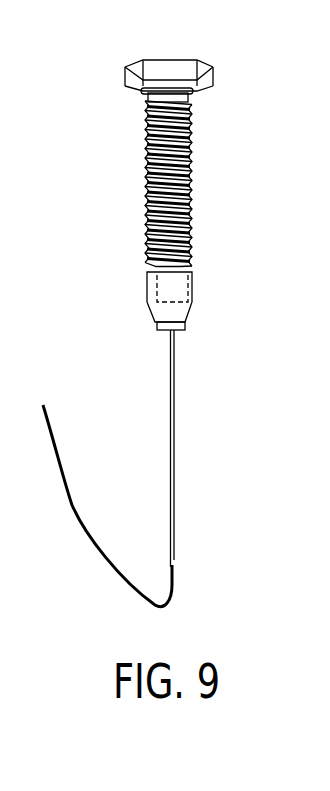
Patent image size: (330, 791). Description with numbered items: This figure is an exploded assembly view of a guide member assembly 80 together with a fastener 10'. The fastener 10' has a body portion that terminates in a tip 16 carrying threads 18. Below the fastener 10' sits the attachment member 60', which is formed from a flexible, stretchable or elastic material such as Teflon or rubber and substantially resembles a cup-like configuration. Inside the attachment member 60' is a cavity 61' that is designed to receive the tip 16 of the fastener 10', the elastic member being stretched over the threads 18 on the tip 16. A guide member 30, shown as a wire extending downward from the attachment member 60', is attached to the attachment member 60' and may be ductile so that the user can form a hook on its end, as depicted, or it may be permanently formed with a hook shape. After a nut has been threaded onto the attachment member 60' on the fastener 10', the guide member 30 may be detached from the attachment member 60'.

The fastener 10' is at (190, 163).
The tip 16 is at (181, 184).
The threads 18 is at (147, 247).
The attachment member 60' is at (190, 297).
The cavity 61' is at (139, 283).
The guide member 30 is at (174, 469).
The guide member assembly 80 is at (113, 379).